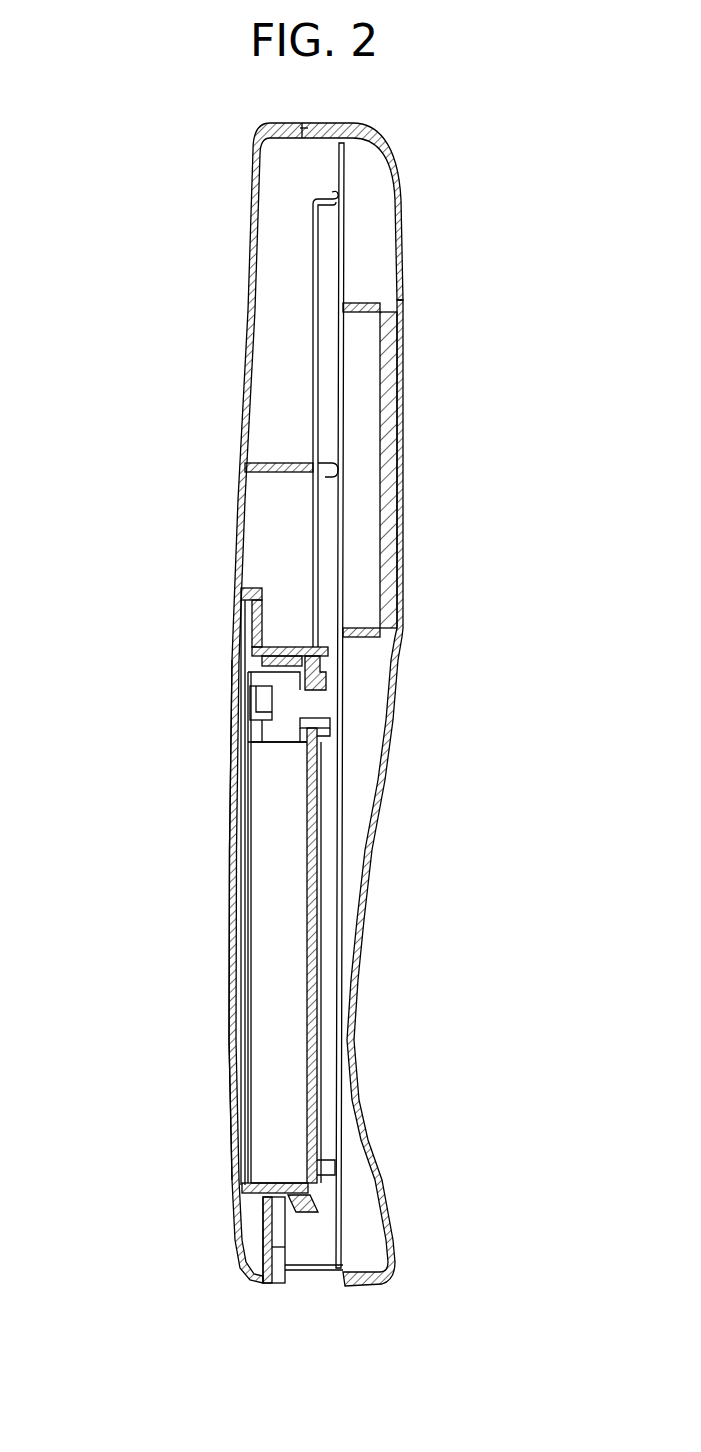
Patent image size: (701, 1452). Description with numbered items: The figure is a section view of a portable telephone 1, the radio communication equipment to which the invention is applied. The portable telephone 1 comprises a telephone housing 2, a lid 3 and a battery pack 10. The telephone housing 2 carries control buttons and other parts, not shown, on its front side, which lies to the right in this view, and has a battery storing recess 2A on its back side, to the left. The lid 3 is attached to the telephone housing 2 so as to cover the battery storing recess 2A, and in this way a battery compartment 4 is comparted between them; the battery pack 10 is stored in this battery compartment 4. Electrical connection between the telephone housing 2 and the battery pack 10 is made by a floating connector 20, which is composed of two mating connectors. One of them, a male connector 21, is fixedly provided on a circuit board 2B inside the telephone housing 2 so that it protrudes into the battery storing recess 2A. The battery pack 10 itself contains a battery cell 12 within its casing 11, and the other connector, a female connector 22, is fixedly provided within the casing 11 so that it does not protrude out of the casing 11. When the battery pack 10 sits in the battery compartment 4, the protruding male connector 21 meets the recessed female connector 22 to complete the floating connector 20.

The portable telephone 1 is at (163, 370).
The telephone housing 2 is at (406, 476).
The battery storing recess 2A is at (340, 1028).
The circuit board 2B is at (344, 915).
The lid 3 is at (233, 1052).
The battery compartment 4 is at (237, 800).
The battery pack 10 is at (244, 905).
The casing 11 is at (258, 1196).
The battery cell 12 is at (265, 967).
The floating connector 20 is at (284, 736).
The male connector 21 is at (325, 703).
The female connector 22 is at (283, 693).